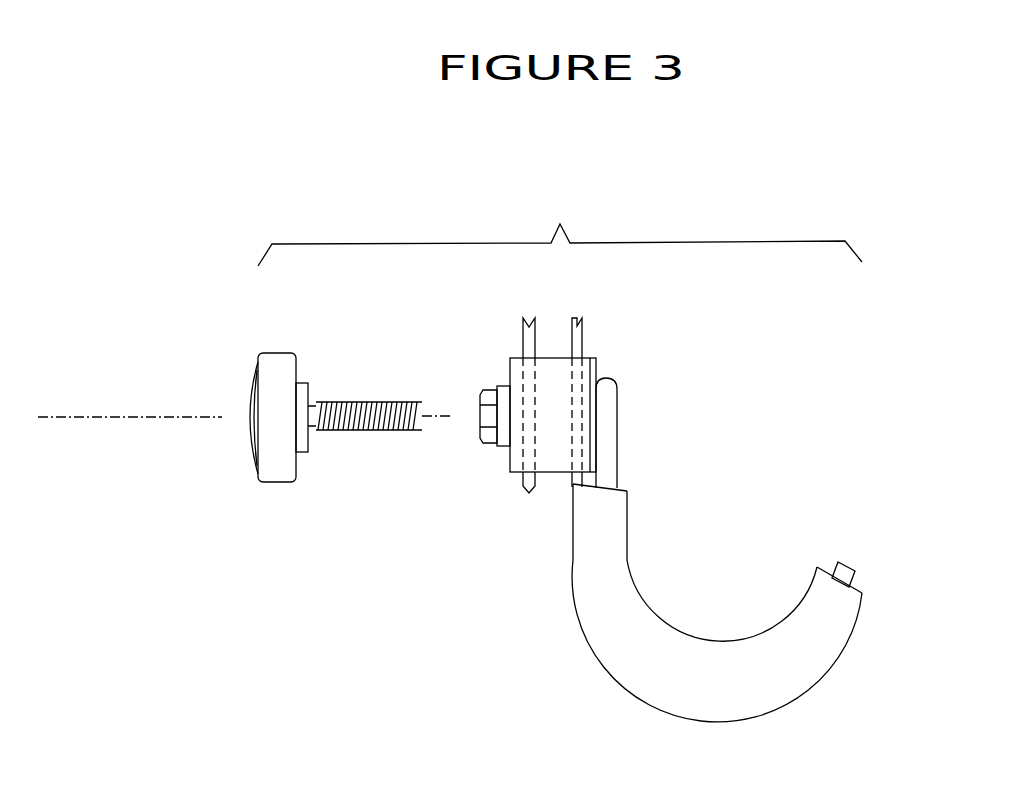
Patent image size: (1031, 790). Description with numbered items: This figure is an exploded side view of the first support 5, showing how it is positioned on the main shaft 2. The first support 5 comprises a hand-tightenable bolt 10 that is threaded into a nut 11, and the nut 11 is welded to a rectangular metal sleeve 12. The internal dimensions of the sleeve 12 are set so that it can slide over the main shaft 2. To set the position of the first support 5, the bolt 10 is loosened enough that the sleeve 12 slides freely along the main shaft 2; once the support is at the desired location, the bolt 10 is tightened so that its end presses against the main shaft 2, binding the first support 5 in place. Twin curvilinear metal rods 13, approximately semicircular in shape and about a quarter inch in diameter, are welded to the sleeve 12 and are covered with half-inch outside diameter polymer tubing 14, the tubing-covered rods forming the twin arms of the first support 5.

The first support 5 is at (560, 223).
The hand-tightenable bolt 10 is at (285, 468).
The nut 11 is at (483, 447).
The rectangular metal sleeve 12 is at (510, 372).
The main shaft 2 is at (535, 327).
The curvilinear metal rod 13 is at (608, 440).
The polymer tubing 14 is at (615, 593).